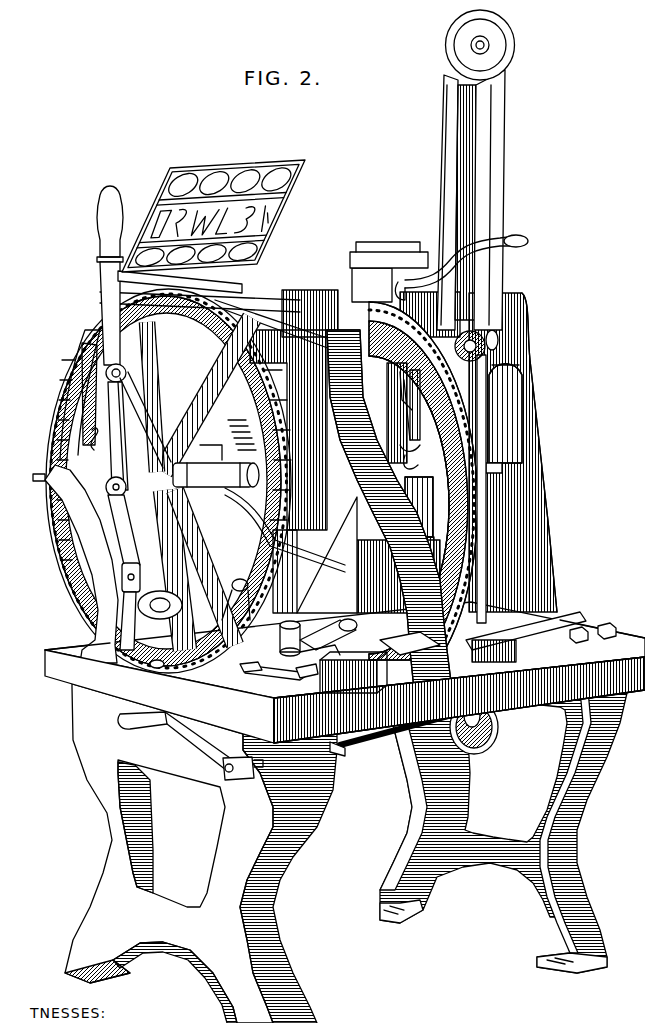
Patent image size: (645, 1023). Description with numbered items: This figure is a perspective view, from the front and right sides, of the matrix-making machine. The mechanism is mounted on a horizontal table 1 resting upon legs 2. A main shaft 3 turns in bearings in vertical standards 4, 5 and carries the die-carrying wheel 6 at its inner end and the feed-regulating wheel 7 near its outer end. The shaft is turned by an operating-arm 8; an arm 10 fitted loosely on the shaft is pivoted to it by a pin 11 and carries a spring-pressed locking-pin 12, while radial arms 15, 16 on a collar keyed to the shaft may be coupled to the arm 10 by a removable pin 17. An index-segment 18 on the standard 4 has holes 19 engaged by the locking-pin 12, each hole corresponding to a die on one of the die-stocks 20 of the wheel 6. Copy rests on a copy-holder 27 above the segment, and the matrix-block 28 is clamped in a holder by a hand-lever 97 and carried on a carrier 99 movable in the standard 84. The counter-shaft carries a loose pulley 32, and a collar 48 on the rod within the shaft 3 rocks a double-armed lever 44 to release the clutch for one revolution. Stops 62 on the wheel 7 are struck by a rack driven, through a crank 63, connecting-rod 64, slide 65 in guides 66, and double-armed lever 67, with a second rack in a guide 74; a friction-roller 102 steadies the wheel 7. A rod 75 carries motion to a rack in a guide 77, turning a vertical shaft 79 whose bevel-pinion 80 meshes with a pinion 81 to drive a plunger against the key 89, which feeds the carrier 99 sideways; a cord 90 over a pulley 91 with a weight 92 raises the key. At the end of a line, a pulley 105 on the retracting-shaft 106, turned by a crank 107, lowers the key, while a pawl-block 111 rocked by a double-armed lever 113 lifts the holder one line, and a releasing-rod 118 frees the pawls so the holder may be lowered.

The table 1 is at (345, 681).
The legs 2 is at (346, 853).
The main shaft 3 is at (216, 475).
The vertical standard 4 is at (168, 481).
The vertical standard 5 is at (389, 510).
The die-carrying wheel 6 is at (423, 481).
The feed-regulating wheel 7 is at (75, 496).
The operating-arm 8 is at (110, 313).
The arm 10 is at (119, 436).
The pin 11 is at (136, 372).
The locking-pin 12 is at (110, 242).
The arm 15 is at (118, 468).
The arm 16 is at (124, 572).
The removable pin 17 is at (81, 394).
The index-segment 18 is at (68, 362).
The holes 19 is at (270, 452).
The die-stocks 20 is at (230, 435).
The copy-holder 27 is at (211, 220).
The matrix-block 28 is at (371, 302).
The loose pulley 32 is at (159, 605).
The double-armed lever 44 is at (236, 589).
The collar 48 is at (211, 453).
The stops 62 is at (95, 439).
The crank 63 is at (335, 636).
The connecting-rod 64 is at (301, 638).
The slide 65 is at (278, 680).
The guides 66 is at (275, 681).
The double-armed lever 67 is at (320, 655).
The guide 74 is at (348, 672).
The rod 75 is at (410, 645).
The guide 77 is at (526, 637).
The vertical shaft 79 is at (490, 565).
The bevel-pinion 80 is at (500, 348).
The bevel-pinion 81 is at (490, 335).
The standard 84 is at (517, 452).
The key 89 is at (419, 567).
The cord 90 is at (474, 200).
The pulley 91 is at (470, 45).
The weight 92 is at (505, 413).
The hand-lever 97 is at (461, 267).
The carrier 99 is at (389, 253).
The friction-roller 102 is at (155, 668).
The pulley 105 is at (484, 730).
The retracting-shaft 106 is at (396, 737).
The crank 107 is at (190, 746).
The pawl-block 111 is at (405, 413).
The double-armed lever 113 is at (414, 457).
The releasing-rod 118 is at (500, 481).